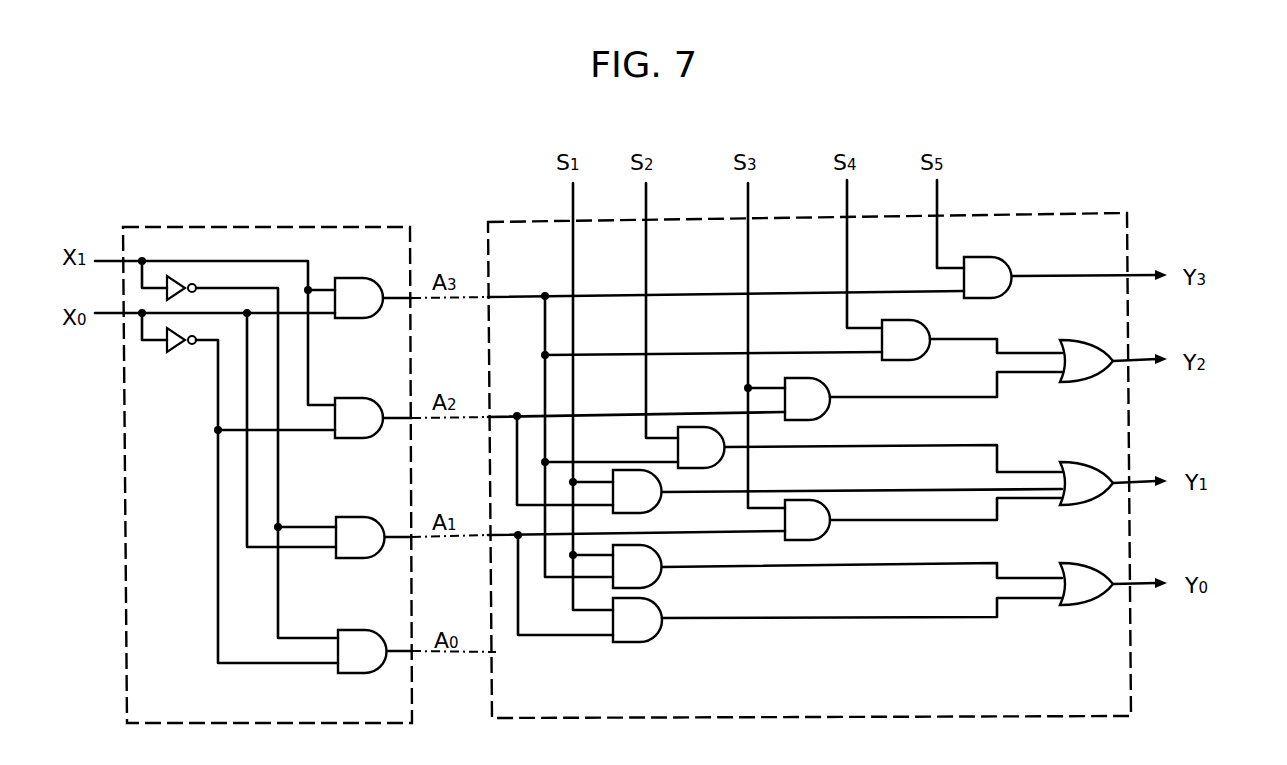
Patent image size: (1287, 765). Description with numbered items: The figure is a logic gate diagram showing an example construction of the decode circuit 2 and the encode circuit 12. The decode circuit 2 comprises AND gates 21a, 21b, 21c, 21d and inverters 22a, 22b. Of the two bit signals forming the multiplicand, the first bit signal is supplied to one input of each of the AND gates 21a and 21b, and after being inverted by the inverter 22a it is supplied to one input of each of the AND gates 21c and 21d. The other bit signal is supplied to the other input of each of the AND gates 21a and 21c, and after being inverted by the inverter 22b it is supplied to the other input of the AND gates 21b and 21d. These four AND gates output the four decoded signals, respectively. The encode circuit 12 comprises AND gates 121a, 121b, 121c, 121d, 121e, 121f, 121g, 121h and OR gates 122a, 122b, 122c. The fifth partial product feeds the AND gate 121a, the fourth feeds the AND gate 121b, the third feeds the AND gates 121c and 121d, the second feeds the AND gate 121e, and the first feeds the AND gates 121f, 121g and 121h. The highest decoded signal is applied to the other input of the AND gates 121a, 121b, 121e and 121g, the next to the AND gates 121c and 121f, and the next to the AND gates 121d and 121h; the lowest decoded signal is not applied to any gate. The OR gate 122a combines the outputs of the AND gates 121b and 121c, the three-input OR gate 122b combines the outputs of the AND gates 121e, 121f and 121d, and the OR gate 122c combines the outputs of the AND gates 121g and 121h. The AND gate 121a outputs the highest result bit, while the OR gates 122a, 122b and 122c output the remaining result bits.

The decode circuit 2 is at (372, 226).
The encode circuit 12 is at (1089, 212).
The AND gate 21a is at (363, 285).
The AND gate 21b is at (363, 402).
The AND gate 21c is at (365, 516).
The AND gate 21d is at (372, 629).
The inverter 22a is at (188, 279).
The inverter 22b is at (170, 353).
The AND gate 121a is at (1000, 266).
The AND gate 121b is at (912, 358).
The AND gate 121c is at (822, 416).
The AND gate 121d is at (823, 536).
The AND gate 121e is at (705, 455).
The AND gate 121f is at (653, 506).
The AND gate 121g is at (653, 582).
The AND gate 121h is at (655, 636).
The OR gate 122a is at (1086, 344).
The OR gate 122b is at (1087, 464).
The OR gate 122c is at (1088, 568).